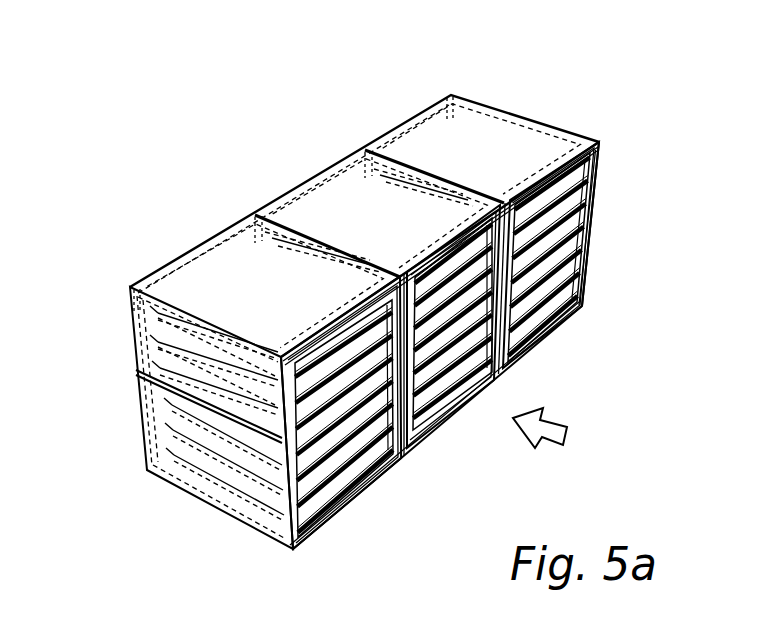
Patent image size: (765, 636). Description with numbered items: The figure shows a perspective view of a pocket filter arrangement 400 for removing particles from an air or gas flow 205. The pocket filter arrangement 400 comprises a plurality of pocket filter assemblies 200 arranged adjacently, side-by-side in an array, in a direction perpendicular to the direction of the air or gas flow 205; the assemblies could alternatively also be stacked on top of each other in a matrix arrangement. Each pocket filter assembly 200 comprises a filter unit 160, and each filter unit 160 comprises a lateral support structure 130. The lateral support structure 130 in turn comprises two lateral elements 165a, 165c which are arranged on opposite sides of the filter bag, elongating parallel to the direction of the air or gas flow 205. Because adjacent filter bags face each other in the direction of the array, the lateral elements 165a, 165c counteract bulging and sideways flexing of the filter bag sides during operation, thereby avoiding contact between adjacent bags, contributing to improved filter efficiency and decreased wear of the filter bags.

The pocket filter arrangement 400 is at (527, 62).
The pocket filter assembly 200 is at (368, 108).
The filter unit 160 is at (543, 344).
The lateral support structure 130 is at (145, 380).
The lateral element 165a is at (226, 405).
The lateral element 165c is at (361, 363).
The air or gas flow 205 is at (567, 438).